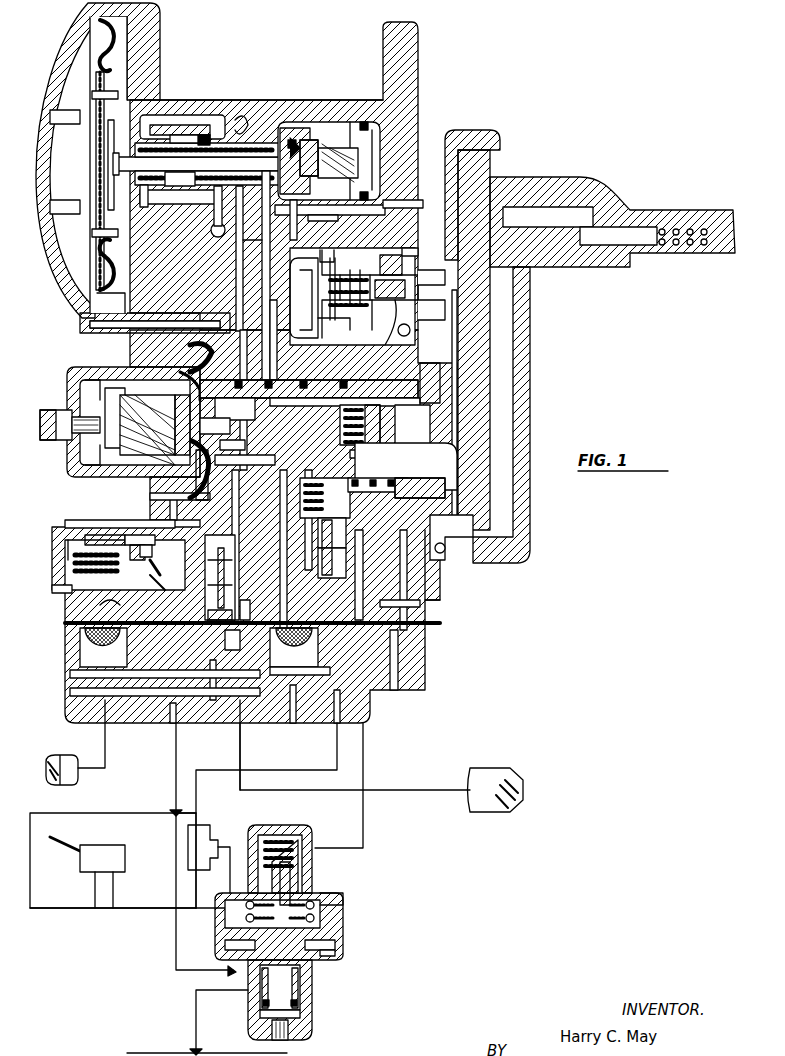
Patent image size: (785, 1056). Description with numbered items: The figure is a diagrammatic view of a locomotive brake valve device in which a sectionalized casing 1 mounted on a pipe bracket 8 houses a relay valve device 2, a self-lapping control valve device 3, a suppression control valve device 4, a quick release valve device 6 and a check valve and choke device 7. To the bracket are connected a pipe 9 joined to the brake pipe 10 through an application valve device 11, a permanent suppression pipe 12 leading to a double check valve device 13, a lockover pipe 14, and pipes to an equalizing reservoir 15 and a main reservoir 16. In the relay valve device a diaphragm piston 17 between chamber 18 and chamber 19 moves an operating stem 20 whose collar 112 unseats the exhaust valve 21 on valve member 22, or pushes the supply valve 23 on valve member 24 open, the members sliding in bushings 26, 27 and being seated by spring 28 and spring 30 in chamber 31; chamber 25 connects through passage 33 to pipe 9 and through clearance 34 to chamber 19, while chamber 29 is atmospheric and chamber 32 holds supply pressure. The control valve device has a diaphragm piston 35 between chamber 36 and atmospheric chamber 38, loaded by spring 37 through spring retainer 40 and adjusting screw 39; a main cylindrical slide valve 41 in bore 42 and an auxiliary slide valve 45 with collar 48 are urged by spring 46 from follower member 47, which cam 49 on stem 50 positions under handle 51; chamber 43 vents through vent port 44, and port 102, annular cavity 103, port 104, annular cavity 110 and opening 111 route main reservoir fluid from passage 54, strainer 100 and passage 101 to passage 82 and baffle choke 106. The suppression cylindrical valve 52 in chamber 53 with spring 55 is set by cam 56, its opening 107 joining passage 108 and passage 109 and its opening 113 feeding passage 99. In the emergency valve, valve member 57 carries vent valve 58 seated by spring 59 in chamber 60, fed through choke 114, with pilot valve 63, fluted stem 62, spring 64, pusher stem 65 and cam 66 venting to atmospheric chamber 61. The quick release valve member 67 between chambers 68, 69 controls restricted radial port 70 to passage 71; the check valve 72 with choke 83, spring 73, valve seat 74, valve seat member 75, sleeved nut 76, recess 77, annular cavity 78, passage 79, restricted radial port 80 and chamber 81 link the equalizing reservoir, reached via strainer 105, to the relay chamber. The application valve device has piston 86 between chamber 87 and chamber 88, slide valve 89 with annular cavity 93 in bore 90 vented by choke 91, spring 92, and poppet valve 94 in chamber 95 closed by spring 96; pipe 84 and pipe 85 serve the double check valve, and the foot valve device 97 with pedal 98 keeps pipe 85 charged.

The sectionalized casing 1 is at (245, 100).
The relay valve device 2 is at (44, 76).
The self-lapping control valve device 3 is at (68, 404).
The suppression control valve device 4 is at (420, 465).
The quick release valve device 6 is at (198, 634).
The check valve and choke device 7 is at (52, 545).
The pipe bracket 8 is at (66, 644).
The pipe 9 is at (226, 970).
The brake pipe 10 is at (193, 1050).
The application valve device 11 is at (344, 910).
The permanent suppression pipe 12 is at (337, 755).
The double check valve device 13 is at (200, 825).
The lockover pipe 14 is at (363, 785).
The equalizing reservoir 15 is at (50, 755).
The main reservoir 16 is at (492, 768).
The diaphragm piston 17 is at (96, 150).
The chamber 18 is at (63, 195).
The chamber 19 is at (130, 290).
The operating stem 20 is at (240, 157).
The exhaust valve 21 is at (210, 143).
The valve member 22 is at (195, 135).
The supply valve 23 is at (290, 138).
The valve member 24 is at (312, 138).
The chamber 25 is at (246, 130).
The bushing 26 is at (172, 117).
The bushing 27 is at (362, 122).
The helical spring 28 is at (150, 205).
The atmospheric chamber 29 is at (216, 237).
The helical spring 30 is at (360, 150).
The chamber 31 is at (366, 170).
The chamber 32 is at (292, 208).
The passage 33 is at (188, 736).
The groove or clearance 34 is at (182, 200).
The diaphragm piston 35 is at (188, 352).
The chamber 36 is at (190, 462).
The helical spring 37 is at (178, 375).
The atmospheric chamber 38 is at (84, 460).
The adjusting screw 39 is at (55, 440).
The spring retainer 40 is at (84, 382).
The main cylindrical slide valve 41 is at (336, 395).
The bore 42 is at (325, 495).
The chamber 43 is at (458, 380).
The vent port 44 is at (440, 570).
The auxiliary slide valve 45 is at (165, 403).
The helical spring 46 is at (372, 420).
The follower member 47 is at (380, 454).
The collar 48 is at (340, 402).
The cam 49 is at (425, 425).
The stem 50 is at (505, 400).
The handle 51 is at (658, 208).
The cylindrical valve 52 is at (333, 535).
The chamber 53 is at (328, 560).
The passage 54 is at (280, 723).
The helical bias spring 55 is at (376, 482).
The cam 56 is at (451, 539).
The cylindrical valve member 57 is at (375, 330).
The vent valve 58 is at (392, 270).
The helical bias spring 59 is at (365, 280).
The chamber 60 is at (307, 299).
The atmospheric chamber 61 is at (410, 256).
The fluted stem 62 is at (404, 336).
The pilot valve 63 is at (330, 292).
The helical bias spring 64 is at (322, 318).
The pusher stem 65 is at (432, 312).
The cam 66 is at (432, 279).
The hollow cylindrical valve member 67 is at (232, 650).
The chamber 68 is at (212, 647).
The chamber 69 is at (212, 570).
The restricted radial port 70 is at (180, 628).
The passage 71 is at (100, 605).
The check valve 72 is at (160, 585).
The helical bias spring 73 is at (74, 563).
The valve seat 74 is at (130, 535).
The valve seat member 75 is at (140, 545).
The sleeved nut 76 is at (64, 526).
The recess 77 is at (70, 540).
The annular cavity 78 is at (90, 535).
The passage 79 is at (150, 497).
The restricted radial port 80 is at (52, 587).
The chamber 81 is at (155, 543).
The passage 82 is at (207, 477).
The choke 83 is at (159, 565).
The pipe 84 is at (226, 862).
The pipe 85 is at (150, 909).
The piston 86 is at (336, 943).
The chamber 87 is at (336, 955).
The chamber 88 is at (336, 893).
The cylindrical slide valve 89 is at (300, 1003).
The bore 90 is at (300, 965).
The choke 91 is at (290, 1035).
The helical bias spring 92 is at (306, 896).
The annular cavity 93 is at (312, 985).
The poppet valve 94 is at (312, 842).
The chamber 95 is at (300, 845).
The helical spring 96 is at (270, 840).
The foot valve device 97 is at (126, 860).
The pedal 98 is at (50, 840).
The passage 99 is at (338, 735).
The strainer 100 is at (300, 656).
The passage 101 is at (292, 598).
The port 102 is at (299, 550).
The annular cavity 103 is at (222, 429).
The port 104 is at (249, 447).
The strainer 105 is at (84, 655).
The baffle choke 106 is at (240, 465).
The opening 107 is at (412, 560).
The passage 108 is at (420, 606).
The passage 109 is at (218, 675).
The annular cavity 110 is at (276, 336).
The opening 111 is at (263, 397).
The collar 112 is at (212, 135).
The opening 113 is at (410, 483).
The choke 114 is at (320, 252).